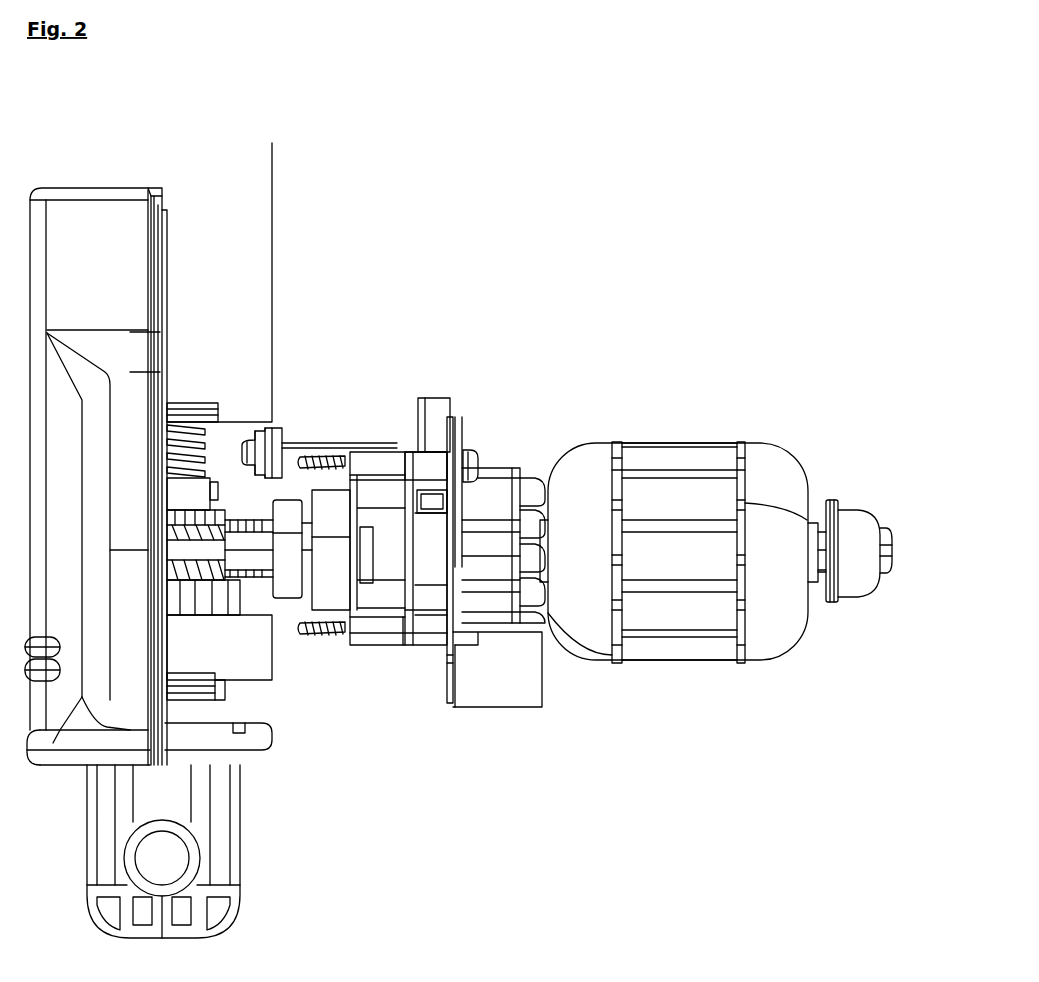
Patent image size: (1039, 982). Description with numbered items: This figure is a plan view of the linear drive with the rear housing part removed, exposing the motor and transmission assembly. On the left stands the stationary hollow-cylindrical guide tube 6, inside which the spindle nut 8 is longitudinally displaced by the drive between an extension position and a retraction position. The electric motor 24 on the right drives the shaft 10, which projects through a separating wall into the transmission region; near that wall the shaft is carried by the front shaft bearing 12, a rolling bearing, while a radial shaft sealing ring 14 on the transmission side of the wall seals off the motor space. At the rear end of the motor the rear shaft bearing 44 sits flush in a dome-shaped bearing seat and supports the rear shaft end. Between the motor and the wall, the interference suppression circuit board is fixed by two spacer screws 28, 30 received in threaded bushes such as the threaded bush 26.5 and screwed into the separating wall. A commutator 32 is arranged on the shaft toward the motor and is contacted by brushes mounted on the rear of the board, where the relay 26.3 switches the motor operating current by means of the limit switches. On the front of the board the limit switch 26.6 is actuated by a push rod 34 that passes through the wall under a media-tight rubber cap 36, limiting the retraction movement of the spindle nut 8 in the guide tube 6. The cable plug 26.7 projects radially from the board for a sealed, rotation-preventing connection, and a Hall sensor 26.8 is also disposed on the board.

The guide tube 6 is at (248, 206).
The spindle nut 8 is at (273, 300).
The shaft 10 is at (888, 540).
The front shaft bearing 12 is at (327, 587).
The radial shaft sealing ring 14 is at (287, 588).
The electric motor 24 is at (773, 467).
The relay 26.3 is at (505, 682).
The threaded bush 26.5 is at (430, 468).
The limit switch 26.6 is at (369, 452).
The cable plug 26.7 is at (434, 410).
The Hall sensor 26.8 is at (432, 497).
The spacer screw 28 is at (330, 452).
The spacer screw 30 is at (335, 633).
The commutator 32 is at (490, 513).
The push rod 34 is at (297, 445).
The rubber cap 36 is at (278, 428).
The rear shaft bearing 44 is at (853, 575).